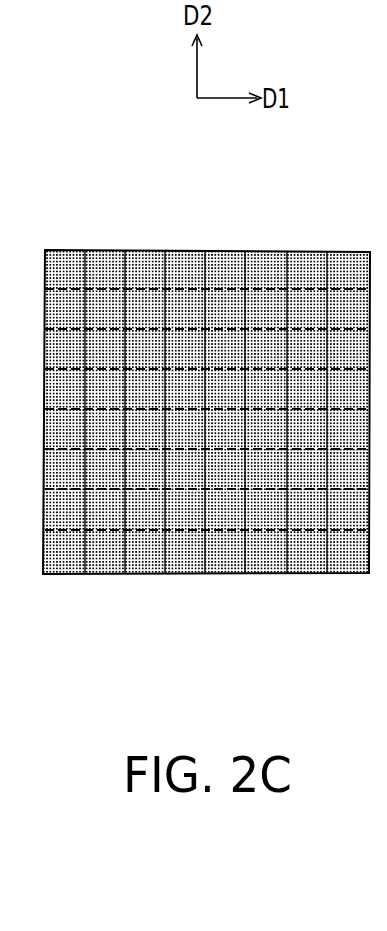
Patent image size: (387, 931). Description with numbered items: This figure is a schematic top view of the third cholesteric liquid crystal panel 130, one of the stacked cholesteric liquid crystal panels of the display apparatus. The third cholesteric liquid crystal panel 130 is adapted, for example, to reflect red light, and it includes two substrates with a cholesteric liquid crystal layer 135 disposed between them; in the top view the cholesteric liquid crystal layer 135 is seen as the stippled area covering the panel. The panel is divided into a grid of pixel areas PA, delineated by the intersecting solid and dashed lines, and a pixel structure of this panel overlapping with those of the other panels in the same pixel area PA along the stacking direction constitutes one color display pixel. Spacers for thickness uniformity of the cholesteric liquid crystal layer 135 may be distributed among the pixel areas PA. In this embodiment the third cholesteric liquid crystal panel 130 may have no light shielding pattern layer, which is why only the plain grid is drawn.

The third cholesteric liquid crystal panel 130 is at (86, 592).
The cholesteric liquid crystal layer 135 is at (104, 256).
The pixel area PA is at (228, 258).